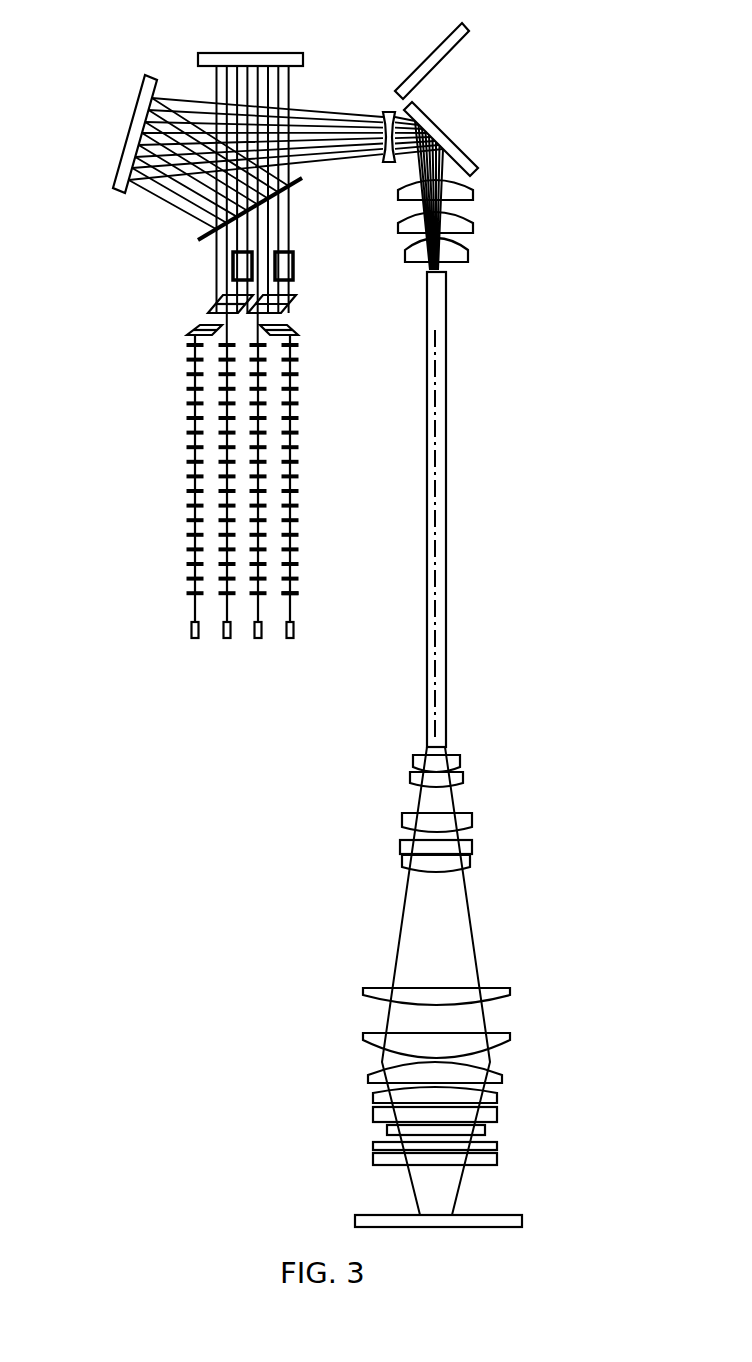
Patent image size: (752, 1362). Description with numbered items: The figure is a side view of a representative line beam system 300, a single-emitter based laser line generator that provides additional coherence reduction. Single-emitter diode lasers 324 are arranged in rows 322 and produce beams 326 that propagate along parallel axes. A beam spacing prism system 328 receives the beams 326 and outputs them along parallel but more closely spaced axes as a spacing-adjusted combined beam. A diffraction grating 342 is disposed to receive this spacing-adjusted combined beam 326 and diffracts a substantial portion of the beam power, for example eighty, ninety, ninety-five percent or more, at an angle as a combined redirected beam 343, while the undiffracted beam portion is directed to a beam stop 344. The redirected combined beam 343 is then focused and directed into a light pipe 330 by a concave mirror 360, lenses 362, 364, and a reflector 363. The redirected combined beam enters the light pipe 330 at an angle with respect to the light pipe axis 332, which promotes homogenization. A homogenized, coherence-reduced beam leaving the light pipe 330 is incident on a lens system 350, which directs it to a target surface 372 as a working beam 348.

The line beam system 300 is at (147, 1027).
The rows 322 is at (305, 650).
The single-emitter diode lasers 324 is at (292, 628).
The beams 326 is at (288, 593).
The beam spacing prism system 328 is at (177, 252).
The light pipe 330 is at (427, 450).
The light pipe axis 332 is at (435, 490).
The diffraction grating 342 is at (282, 222).
The combined redirected beam 343 is at (181, 210).
The beam stop 344 is at (272, 53).
The working beam 348 is at (437, 1195).
The lens system 350 is at (545, 762).
The concave mirror 360 is at (130, 121).
The lens 362 is at (392, 112).
The reflector 363 is at (443, 137).
The lens 364 is at (490, 178).
The target surface 372 is at (377, 1215).